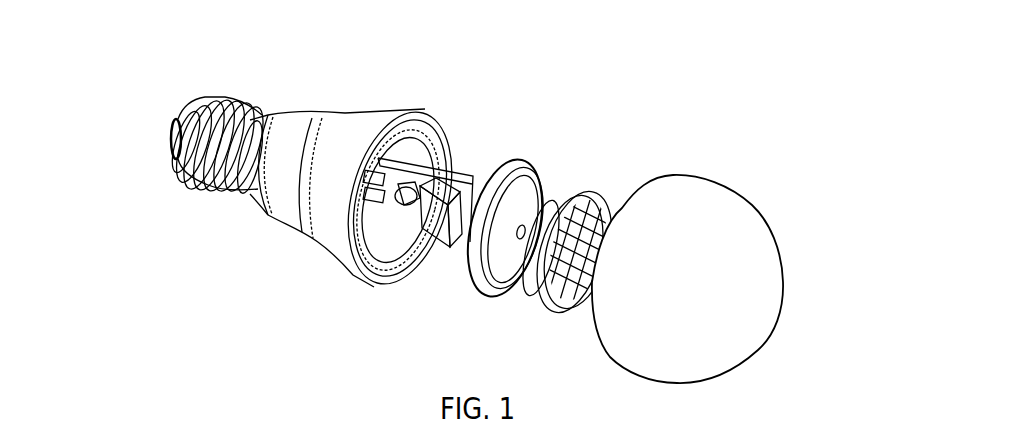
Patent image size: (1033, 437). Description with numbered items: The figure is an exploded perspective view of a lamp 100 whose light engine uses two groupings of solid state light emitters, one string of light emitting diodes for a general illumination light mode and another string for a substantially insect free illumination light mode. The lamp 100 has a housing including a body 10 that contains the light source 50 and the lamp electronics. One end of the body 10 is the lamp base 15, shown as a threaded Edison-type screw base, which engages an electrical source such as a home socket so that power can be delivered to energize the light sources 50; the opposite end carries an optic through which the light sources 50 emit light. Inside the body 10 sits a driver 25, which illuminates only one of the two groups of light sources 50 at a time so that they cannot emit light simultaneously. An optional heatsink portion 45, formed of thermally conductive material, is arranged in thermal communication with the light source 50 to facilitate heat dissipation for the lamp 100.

The lamp 100 is at (603, 113).
The body 10 is at (333, 204).
The lamp base 15 is at (172, 143).
The driver 25 is at (366, 278).
The heatsink portion 45 is at (478, 290).
The light source 50 is at (550, 298).